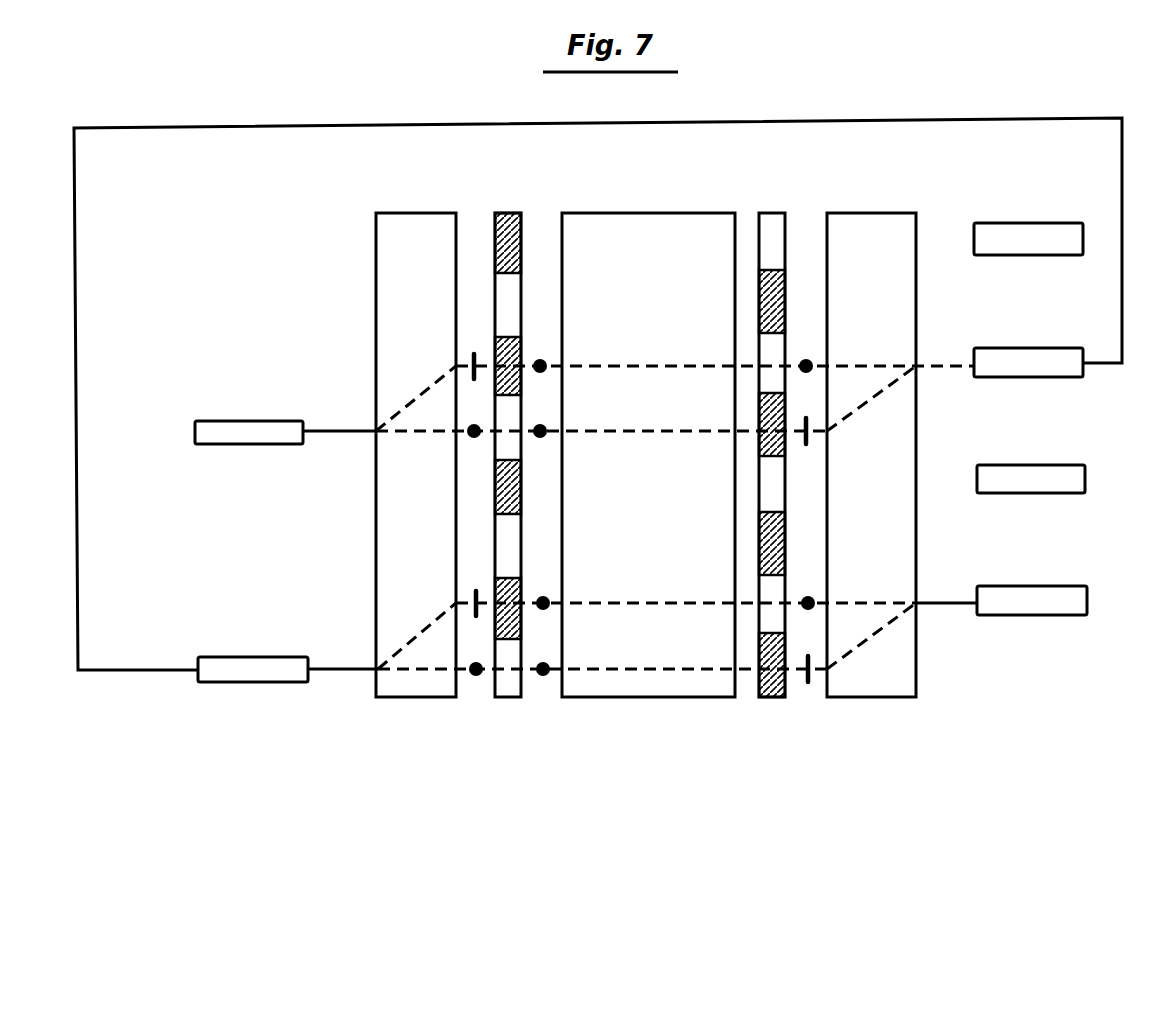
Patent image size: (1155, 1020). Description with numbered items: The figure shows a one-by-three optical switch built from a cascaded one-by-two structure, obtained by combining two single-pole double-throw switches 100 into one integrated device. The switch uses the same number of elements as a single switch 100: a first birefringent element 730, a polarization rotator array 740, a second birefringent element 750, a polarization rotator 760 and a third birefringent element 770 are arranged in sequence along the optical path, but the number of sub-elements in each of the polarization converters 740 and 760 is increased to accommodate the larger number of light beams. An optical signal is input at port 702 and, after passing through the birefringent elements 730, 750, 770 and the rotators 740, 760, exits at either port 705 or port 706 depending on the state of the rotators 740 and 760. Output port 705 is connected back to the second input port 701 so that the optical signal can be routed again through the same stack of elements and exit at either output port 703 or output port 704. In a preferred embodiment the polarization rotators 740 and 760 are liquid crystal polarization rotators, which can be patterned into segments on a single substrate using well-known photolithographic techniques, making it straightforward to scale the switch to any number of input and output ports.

The SPDT switch 100 is at (803, 178).
The port 701 is at (258, 657).
The port 702 is at (252, 421).
The port 703 is at (1065, 615).
The port 704 is at (1065, 493).
The port 705 is at (1060, 377).
The port 706 is at (988, 255).
The birefringent element 730 is at (417, 697).
The polarization rotator array 740 is at (510, 697).
The birefringent element 750 is at (658, 697).
The polarization rotator 760 is at (775, 697).
The birefringent element 770 is at (873, 697).